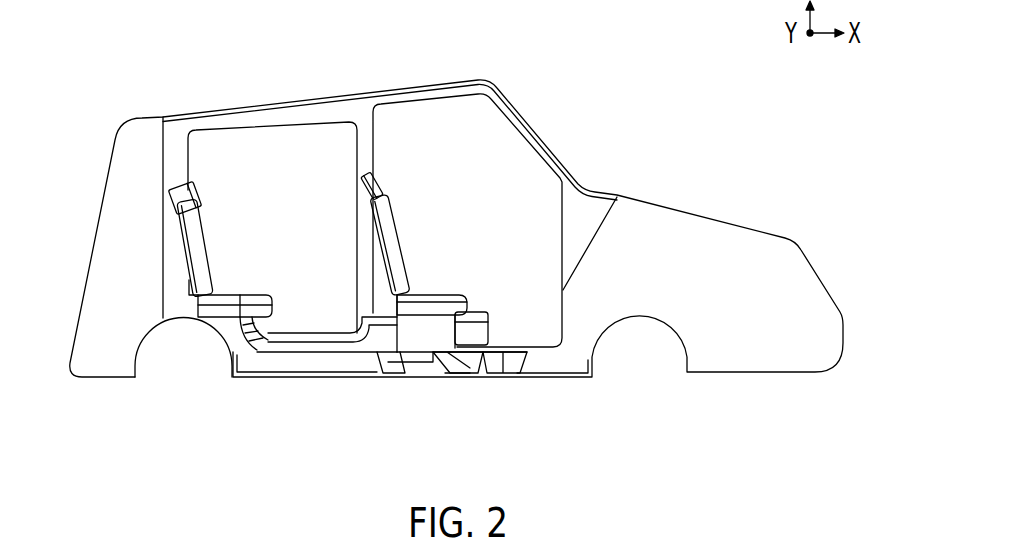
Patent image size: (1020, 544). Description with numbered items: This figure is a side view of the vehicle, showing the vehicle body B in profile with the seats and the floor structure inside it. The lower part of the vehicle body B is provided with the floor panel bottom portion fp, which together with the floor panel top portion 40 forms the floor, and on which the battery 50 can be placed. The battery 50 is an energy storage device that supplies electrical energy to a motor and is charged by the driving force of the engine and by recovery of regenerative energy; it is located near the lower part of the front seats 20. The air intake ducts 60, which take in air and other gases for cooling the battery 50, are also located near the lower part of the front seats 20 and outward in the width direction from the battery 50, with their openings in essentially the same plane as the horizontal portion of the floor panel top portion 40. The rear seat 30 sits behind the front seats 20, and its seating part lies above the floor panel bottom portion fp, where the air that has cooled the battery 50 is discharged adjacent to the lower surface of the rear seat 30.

The vehicle body B is at (520, 103).
The front seats 20 is at (393, 215).
The rear seat 30 is at (202, 218).
The floor panel top portion 40 is at (507, 373).
The battery 50 is at (377, 373).
The air intake ducts 60 is at (418, 373).
The floor panel bottom portion fp is at (452, 375).